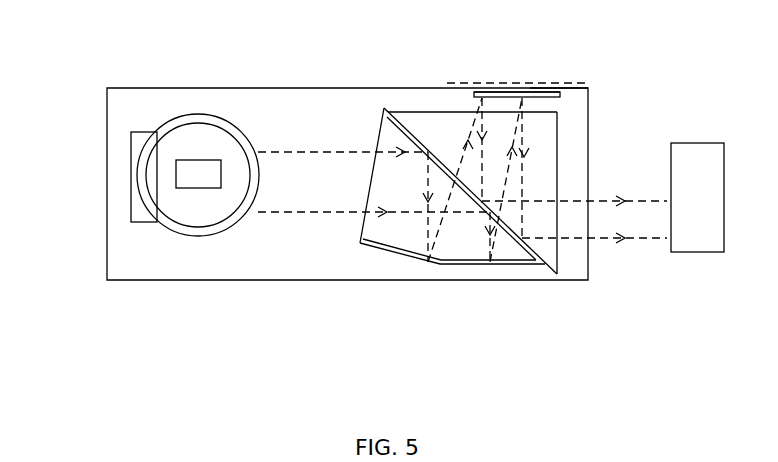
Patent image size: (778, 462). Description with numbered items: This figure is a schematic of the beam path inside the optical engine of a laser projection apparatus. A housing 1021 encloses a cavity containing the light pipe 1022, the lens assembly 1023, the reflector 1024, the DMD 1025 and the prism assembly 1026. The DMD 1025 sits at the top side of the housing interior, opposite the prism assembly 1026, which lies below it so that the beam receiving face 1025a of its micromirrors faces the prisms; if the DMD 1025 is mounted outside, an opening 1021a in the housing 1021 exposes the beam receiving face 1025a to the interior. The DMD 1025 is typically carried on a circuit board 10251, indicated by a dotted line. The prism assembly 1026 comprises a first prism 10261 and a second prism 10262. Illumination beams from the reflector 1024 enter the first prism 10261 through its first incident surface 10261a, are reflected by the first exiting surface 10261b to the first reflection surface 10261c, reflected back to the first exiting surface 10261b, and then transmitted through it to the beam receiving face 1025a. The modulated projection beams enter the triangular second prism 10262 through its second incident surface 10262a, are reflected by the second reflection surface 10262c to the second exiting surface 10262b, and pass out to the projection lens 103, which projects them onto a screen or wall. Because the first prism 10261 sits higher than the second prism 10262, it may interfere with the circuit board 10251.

The housing 1021 is at (137, 280).
The opening 1021a is at (558, 87).
The circuit board 10251 is at (591, 83).
The reflector 1024 is at (131, 212).
The lens assembly 1023 is at (194, 115).
The light pipe 1022 is at (210, 193).
The first prism 10261 is at (418, 196).
The first incident surface 10261a is at (378, 120).
The first exiting surface 10261b is at (397, 117).
The first reflection surface 10261c is at (366, 251).
The second prism 10262 is at (531, 215).
The second incident surface 10262a is at (549, 112).
The second exiting surface 10262b is at (558, 268).
The second reflection surface 10262c is at (541, 245).
The prism assembly 1026 is at (485, 219).
The DMD 1025 is at (481, 90).
The beam receiving face 1025a is at (530, 93).
The projection lens 103 is at (710, 252).